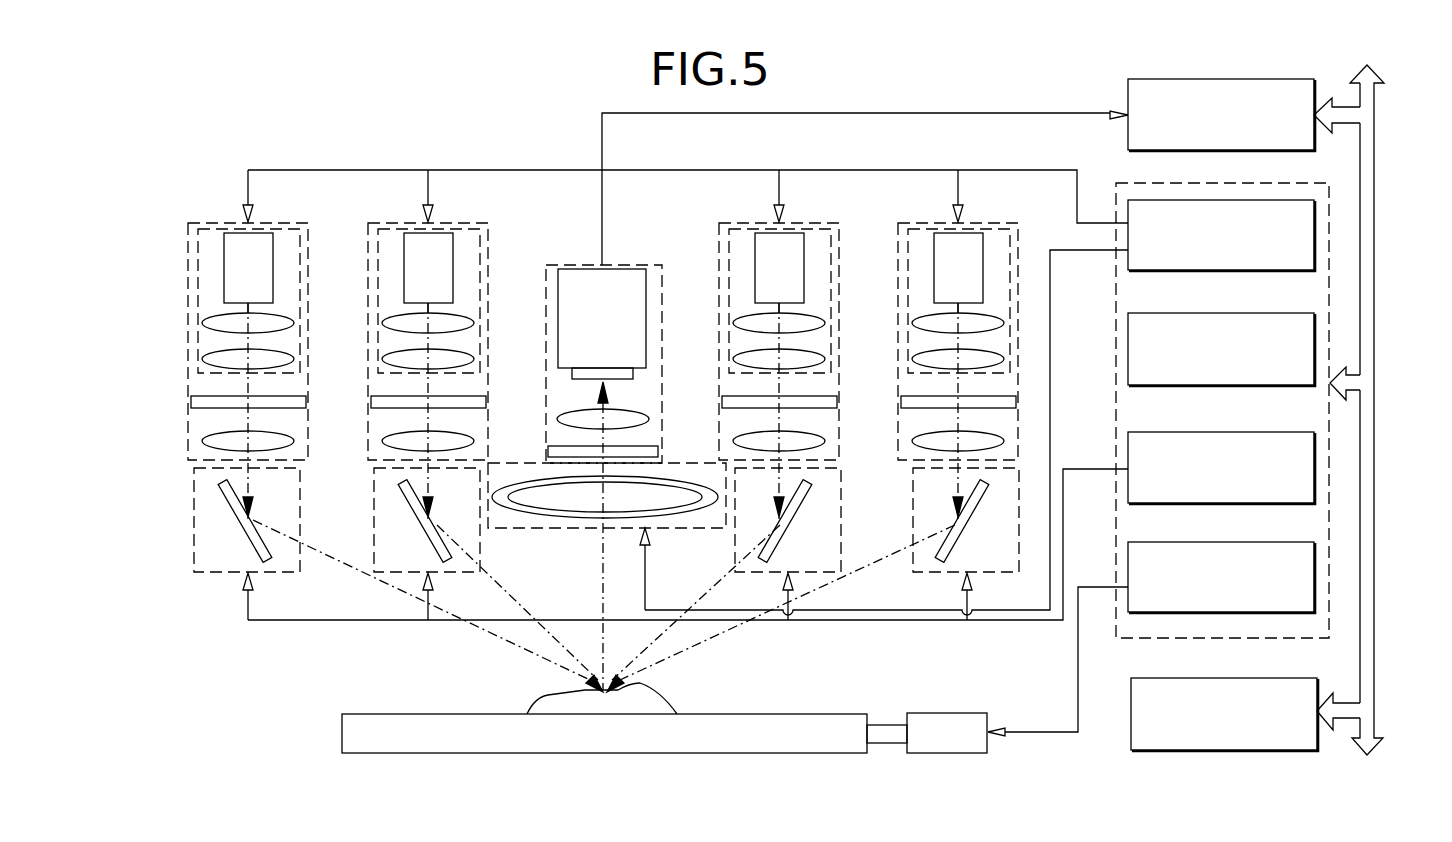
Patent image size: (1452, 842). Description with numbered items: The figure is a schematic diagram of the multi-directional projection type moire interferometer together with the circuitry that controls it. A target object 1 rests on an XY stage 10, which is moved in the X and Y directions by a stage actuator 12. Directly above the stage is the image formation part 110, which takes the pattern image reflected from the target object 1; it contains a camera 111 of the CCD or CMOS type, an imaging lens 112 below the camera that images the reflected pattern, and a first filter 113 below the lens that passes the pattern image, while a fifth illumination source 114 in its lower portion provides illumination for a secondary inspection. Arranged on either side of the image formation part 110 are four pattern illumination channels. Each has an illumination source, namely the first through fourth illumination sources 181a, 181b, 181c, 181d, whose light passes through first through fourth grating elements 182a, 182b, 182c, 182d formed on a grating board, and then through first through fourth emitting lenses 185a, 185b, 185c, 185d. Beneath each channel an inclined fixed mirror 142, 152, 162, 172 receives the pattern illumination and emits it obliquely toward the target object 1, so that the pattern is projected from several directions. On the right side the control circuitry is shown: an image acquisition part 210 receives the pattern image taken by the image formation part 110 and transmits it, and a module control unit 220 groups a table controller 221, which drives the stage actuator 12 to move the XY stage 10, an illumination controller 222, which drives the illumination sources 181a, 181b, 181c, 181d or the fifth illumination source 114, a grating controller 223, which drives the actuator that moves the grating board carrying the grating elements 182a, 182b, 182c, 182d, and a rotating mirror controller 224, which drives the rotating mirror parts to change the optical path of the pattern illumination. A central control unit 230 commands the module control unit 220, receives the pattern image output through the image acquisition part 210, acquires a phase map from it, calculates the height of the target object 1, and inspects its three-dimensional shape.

The target object 1 is at (535, 700).
The XY stage 10 is at (420, 718).
The stage actuator 12 is at (938, 722).
The image formation part 110 is at (628, 257).
The camera 111 is at (577, 275).
The imaging lens 112 is at (568, 412).
The first filter 113 is at (566, 449).
The fifth illumination source 114 is at (563, 515).
The fixed mirror 142 is at (268, 528).
The fixed mirror 152 is at (427, 520).
The fixed mirror 162 is at (788, 520).
The fixed mirror 172 is at (966, 520).
The first illumination source 181a is at (198, 262).
The second illumination source 181b is at (396, 301).
The third illumination source 181c is at (747, 301).
The fourth illumination source 181d is at (926, 301).
The first grating element 182a is at (200, 397).
The second grating element 182b is at (399, 388).
The third grating element 182c is at (750, 388).
The fourth grating element 182d is at (929, 388).
The first emitting lens 185a is at (205, 441).
The second emitting lens 185b is at (393, 430).
The third emitting lens 185c is at (744, 430).
The fourth emitting lens 185d is at (923, 430).
The image acquisition part 210 is at (1133, 92).
The module control unit 220 is at (1345, 518).
The table controller 221 is at (1314, 580).
The illumination controller 222 is at (1314, 231).
The grating controller 223 is at (1314, 343).
The rotating mirror controller 224 is at (1314, 461).
The central control unit 230 is at (1137, 740).